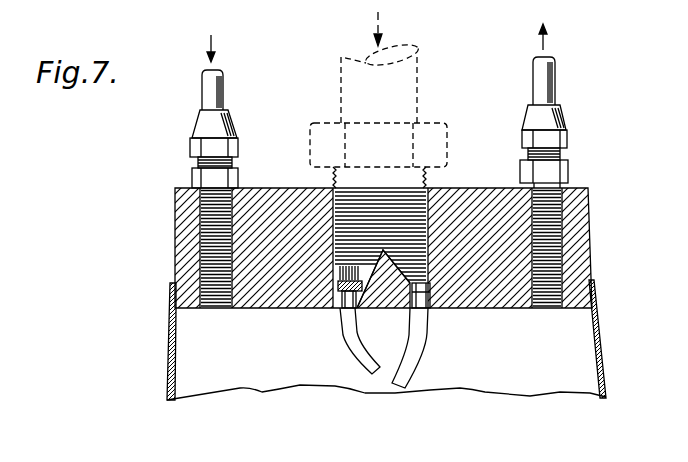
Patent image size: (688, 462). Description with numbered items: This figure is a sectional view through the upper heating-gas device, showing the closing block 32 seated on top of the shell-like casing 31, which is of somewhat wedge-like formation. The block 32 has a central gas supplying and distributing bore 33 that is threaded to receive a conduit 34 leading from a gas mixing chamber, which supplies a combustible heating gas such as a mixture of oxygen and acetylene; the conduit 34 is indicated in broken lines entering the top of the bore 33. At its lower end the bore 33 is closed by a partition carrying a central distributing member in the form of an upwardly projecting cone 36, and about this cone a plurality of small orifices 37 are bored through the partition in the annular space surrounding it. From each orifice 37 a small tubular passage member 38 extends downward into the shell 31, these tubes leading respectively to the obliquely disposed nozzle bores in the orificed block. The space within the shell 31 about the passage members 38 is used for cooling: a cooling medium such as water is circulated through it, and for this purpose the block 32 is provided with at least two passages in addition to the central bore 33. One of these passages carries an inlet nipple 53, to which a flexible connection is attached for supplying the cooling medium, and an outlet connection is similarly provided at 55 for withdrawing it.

The shell-like casing 31 is at (170, 355).
The closing block 32 is at (173, 240).
The gas supplying and distributing bore 33 is at (432, 188).
The conduit 34 is at (420, 83).
The distributing cone 36 is at (374, 308).
The orifices 37 is at (338, 310).
The tubular passage members 38 is at (392, 384).
The inlet nipple 53 is at (222, 92).
The outlet connection 55 is at (554, 85).